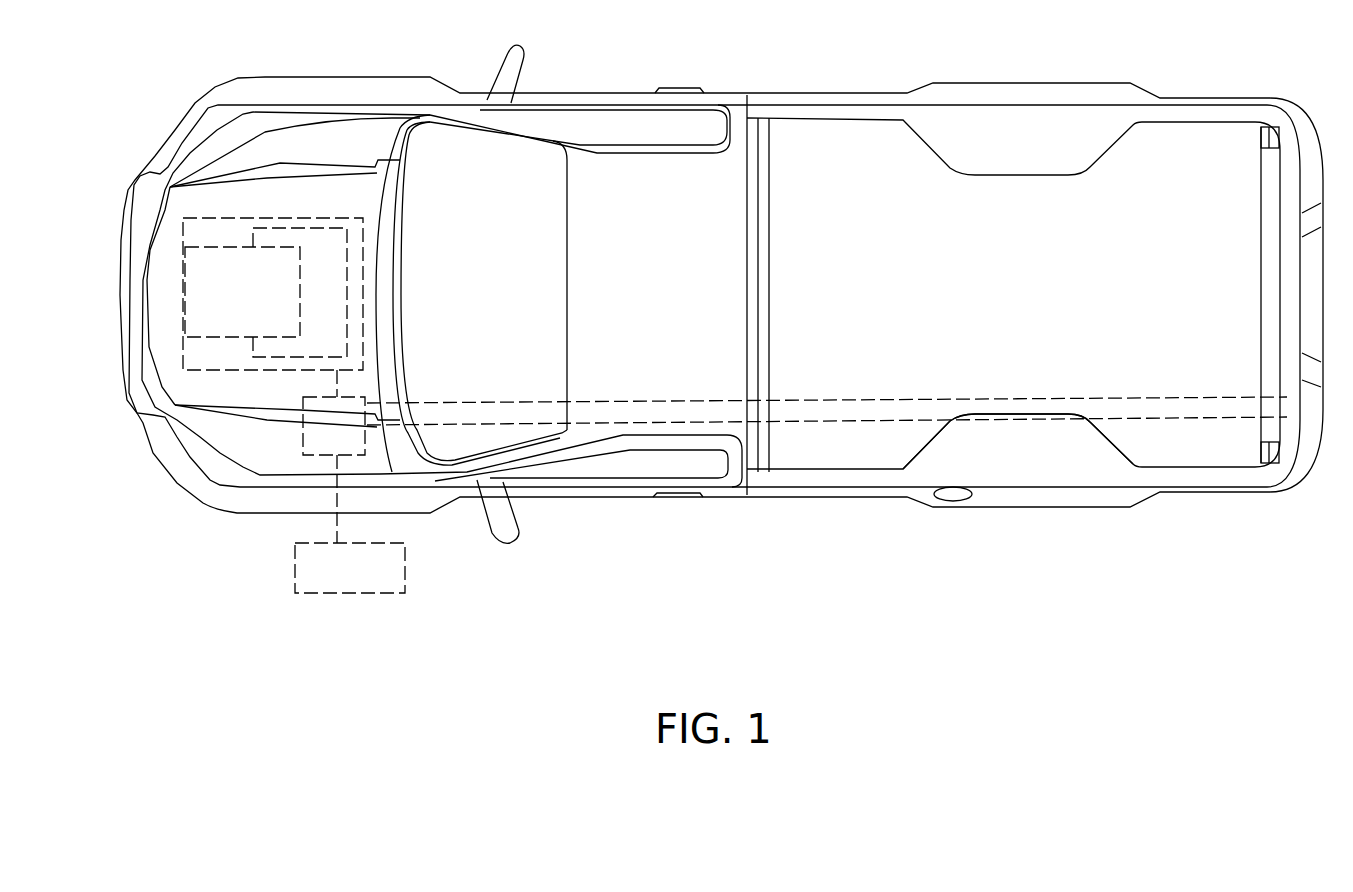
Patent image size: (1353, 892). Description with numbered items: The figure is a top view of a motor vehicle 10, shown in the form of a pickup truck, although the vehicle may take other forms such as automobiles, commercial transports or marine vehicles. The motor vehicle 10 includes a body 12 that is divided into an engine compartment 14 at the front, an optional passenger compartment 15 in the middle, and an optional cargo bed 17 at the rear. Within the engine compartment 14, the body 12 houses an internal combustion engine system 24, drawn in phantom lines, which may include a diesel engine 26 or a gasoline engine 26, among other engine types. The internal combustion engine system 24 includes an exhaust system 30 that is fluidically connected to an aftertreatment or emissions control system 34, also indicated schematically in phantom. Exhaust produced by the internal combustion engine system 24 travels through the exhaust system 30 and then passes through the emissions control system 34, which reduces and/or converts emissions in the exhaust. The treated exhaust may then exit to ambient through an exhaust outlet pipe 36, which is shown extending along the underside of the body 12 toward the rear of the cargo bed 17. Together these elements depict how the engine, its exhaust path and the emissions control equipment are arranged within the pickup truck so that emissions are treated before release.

The motor vehicle 10 is at (1064, 540).
The body 12 is at (822, 498).
The engine compartment 14 is at (292, 158).
The passenger compartment 15 is at (512, 160).
The cargo bed 17 is at (882, 158).
The internal combustion engine (ICE) system 24 is at (203, 310).
The engine 26 is at (195, 232).
The exhaust system 30 is at (230, 375).
The emissions control system 34 is at (286, 441).
The exhaust outlet pipe 36 is at (1152, 437).